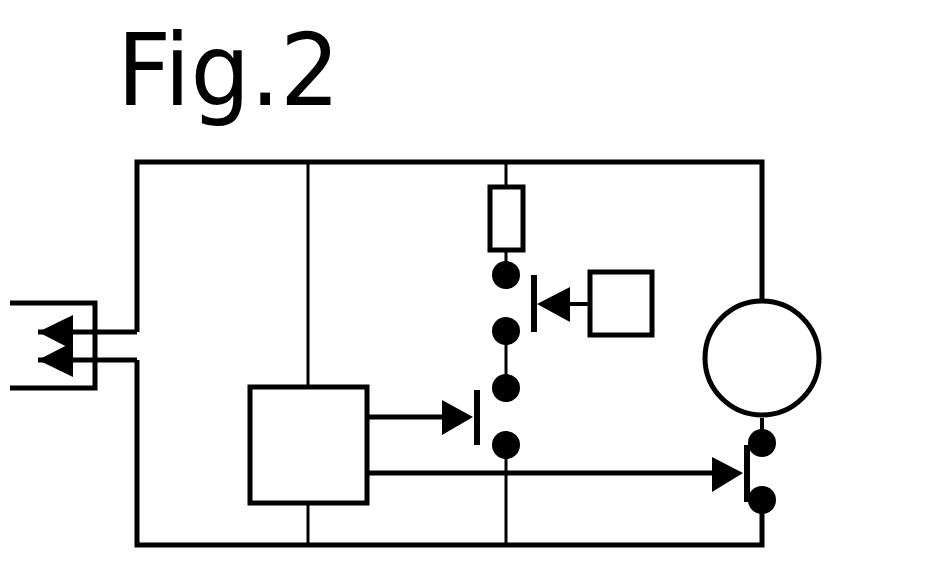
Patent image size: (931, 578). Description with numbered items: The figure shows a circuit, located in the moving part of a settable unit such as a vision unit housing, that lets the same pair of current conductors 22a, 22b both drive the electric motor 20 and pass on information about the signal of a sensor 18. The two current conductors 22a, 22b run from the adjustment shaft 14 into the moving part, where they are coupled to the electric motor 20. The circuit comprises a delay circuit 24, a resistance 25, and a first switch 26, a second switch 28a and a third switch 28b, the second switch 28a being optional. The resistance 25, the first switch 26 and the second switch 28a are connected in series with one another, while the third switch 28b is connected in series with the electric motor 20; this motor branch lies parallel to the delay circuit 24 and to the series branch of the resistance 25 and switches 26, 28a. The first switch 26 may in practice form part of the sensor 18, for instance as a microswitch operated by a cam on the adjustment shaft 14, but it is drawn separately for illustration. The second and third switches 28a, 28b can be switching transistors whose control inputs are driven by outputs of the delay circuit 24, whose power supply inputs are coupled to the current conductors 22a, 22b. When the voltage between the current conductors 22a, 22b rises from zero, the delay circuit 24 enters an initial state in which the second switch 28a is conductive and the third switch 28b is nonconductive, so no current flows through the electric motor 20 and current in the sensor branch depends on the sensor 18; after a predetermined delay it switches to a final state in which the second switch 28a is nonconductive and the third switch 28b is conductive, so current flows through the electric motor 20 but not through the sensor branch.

The adjustment shaft 14 is at (50, 303).
The sensor 18 is at (616, 272).
The electric motor 20 is at (822, 358).
The current conductor 22a is at (255, 165).
The current conductor 22b is at (252, 540).
The delay circuit 24 is at (333, 387).
The resistance 25 is at (490, 222).
The first switch 26 is at (507, 305).
The second switch 28a is at (507, 415).
The third switch 28b is at (763, 470).